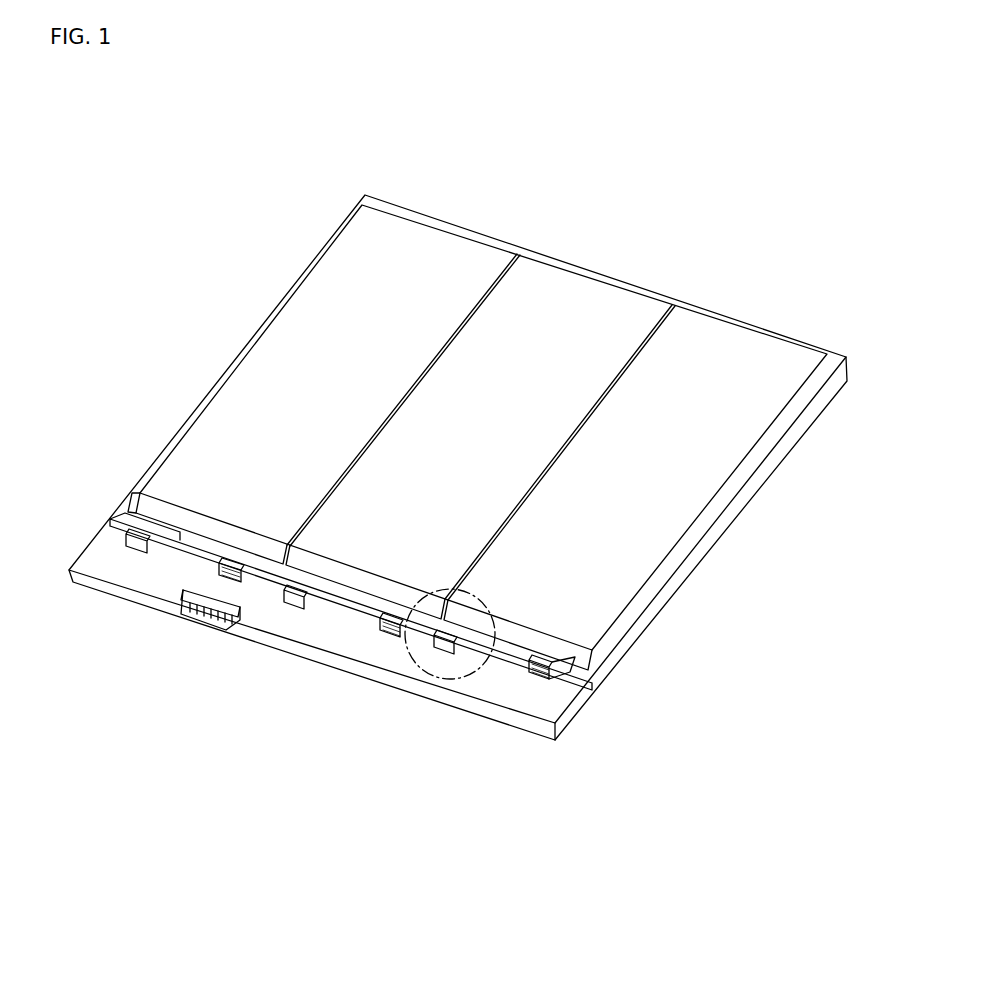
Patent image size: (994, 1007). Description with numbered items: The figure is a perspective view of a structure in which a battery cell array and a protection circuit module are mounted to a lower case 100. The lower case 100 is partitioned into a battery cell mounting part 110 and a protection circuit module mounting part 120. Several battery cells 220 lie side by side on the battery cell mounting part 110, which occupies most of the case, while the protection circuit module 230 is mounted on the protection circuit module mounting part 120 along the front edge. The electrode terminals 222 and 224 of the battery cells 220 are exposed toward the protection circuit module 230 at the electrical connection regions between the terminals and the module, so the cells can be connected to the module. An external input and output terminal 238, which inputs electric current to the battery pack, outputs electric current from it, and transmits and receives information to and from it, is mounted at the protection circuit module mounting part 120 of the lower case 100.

The lower case 100 is at (266, 268).
The battery cell mounting part 110 is at (752, 490).
The protection circuit module mounting part 120 is at (530, 720).
The battery cell 220 is at (742, 372).
The electrode terminal 222 is at (557, 688).
The electrode terminal 224 is at (452, 650).
The protection circuit module 230 is at (352, 645).
The external input and output terminal 238 is at (206, 632).